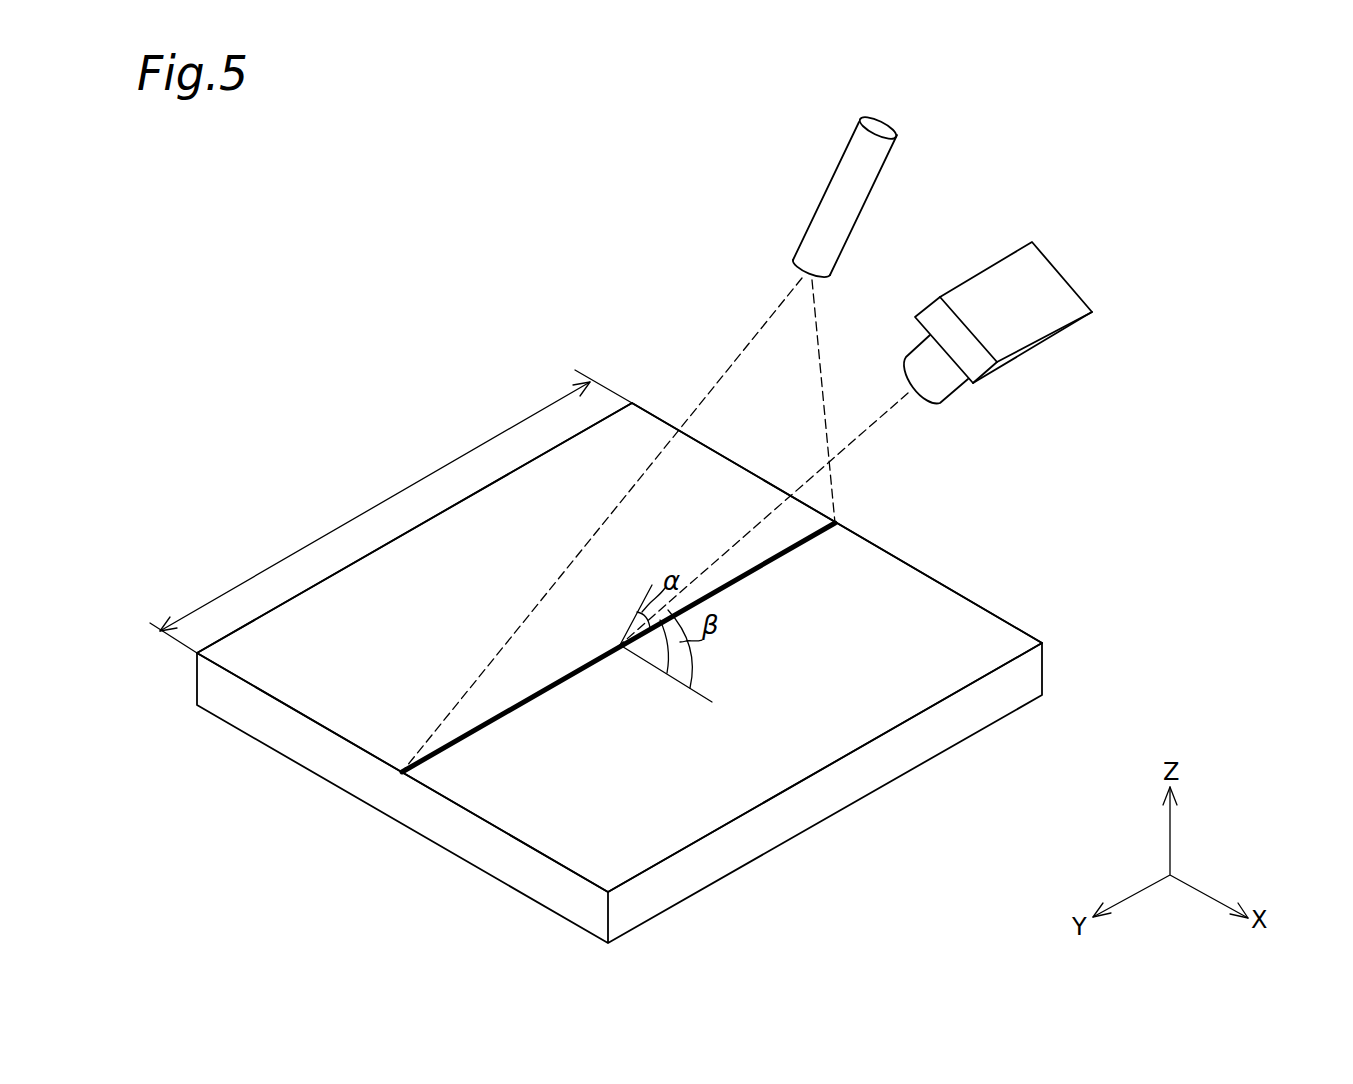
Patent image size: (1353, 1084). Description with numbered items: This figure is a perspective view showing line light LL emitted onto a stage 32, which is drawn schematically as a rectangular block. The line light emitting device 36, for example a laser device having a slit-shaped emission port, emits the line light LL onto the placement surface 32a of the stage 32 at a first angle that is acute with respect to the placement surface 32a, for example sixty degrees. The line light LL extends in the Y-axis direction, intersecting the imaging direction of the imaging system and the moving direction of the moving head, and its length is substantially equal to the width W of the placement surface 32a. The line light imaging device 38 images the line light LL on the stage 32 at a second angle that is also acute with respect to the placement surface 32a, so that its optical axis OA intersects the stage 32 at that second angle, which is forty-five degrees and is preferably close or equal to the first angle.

The stage 32 is at (387, 795).
The placement surface 32a is at (504, 553).
The line light emitting device 36 is at (890, 132).
The line light imaging device 38 is at (1035, 288).
The line light LL is at (550, 682).
The optical axis OA is at (868, 432).
The width W is at (391, 511).